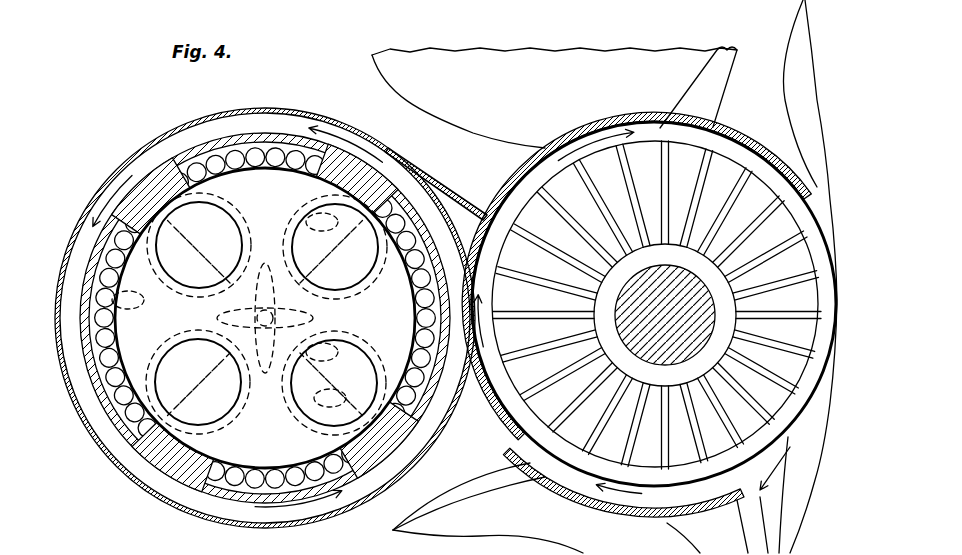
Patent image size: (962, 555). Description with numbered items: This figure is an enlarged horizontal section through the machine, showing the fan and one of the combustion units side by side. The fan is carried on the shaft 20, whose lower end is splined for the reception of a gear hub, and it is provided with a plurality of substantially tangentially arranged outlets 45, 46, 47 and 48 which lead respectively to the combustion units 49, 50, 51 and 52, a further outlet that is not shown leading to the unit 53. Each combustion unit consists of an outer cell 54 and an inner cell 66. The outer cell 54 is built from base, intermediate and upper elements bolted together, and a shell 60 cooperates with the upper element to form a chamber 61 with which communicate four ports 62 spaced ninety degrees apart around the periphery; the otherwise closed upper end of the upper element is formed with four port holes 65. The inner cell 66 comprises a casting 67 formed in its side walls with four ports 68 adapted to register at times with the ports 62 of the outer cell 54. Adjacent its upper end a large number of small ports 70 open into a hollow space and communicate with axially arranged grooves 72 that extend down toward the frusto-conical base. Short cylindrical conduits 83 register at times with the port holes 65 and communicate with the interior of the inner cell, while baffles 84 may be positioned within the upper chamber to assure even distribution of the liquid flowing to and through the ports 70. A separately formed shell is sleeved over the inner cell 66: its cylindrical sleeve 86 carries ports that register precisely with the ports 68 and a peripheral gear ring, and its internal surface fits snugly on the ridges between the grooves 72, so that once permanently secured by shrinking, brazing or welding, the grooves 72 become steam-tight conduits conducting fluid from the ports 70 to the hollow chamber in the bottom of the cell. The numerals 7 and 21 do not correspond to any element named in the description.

The shaft 7 is at (335, 299).
The shaft 20 is at (682, 348).
The spokes 21 is at (657, 305).
The outlet 45 is at (763, 500).
The outlet 46 is at (461, 493).
The outlet 47 is at (470, 213).
The outlet 48 is at (722, 100).
The combustion unit 49 is at (793, 495).
The combustion unit 50 is at (546, 515).
The combustion unit 51 is at (129, 153).
The combustion unit 52 is at (554, 98).
The unit 53 is at (810, 276).
The outer cell 54 is at (192, 164).
The shell 60 is at (80, 403).
The chamber 61 is at (112, 435).
The ports 62 is at (250, 138).
The port holes 65 is at (238, 315).
The inner cell 66 is at (265, 318).
The casting 67 is at (277, 170).
The ports 68 is at (145, 202).
The small ports 70 is at (251, 327).
The grooves 72 is at (195, 452).
The short cylindrical conduits 83 is at (266, 314).
The baffles 84 is at (218, 446).
The cylindrical sleeve 86 is at (262, 132).